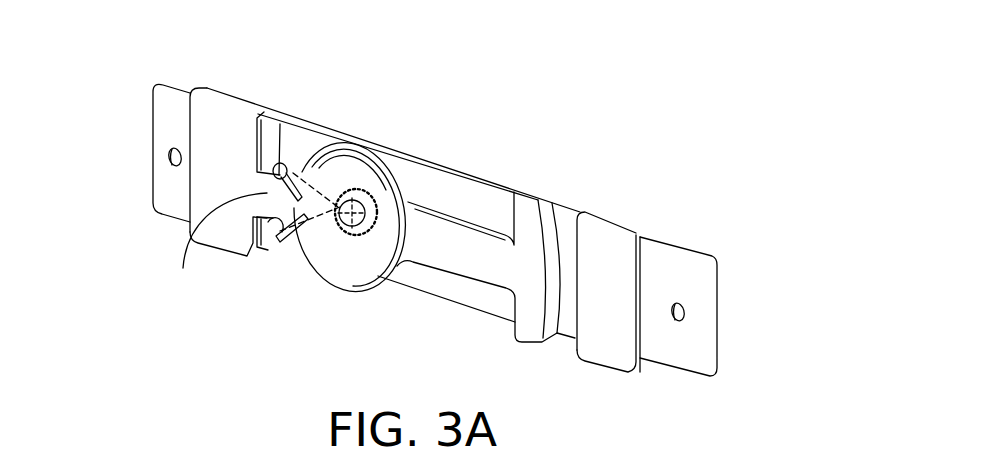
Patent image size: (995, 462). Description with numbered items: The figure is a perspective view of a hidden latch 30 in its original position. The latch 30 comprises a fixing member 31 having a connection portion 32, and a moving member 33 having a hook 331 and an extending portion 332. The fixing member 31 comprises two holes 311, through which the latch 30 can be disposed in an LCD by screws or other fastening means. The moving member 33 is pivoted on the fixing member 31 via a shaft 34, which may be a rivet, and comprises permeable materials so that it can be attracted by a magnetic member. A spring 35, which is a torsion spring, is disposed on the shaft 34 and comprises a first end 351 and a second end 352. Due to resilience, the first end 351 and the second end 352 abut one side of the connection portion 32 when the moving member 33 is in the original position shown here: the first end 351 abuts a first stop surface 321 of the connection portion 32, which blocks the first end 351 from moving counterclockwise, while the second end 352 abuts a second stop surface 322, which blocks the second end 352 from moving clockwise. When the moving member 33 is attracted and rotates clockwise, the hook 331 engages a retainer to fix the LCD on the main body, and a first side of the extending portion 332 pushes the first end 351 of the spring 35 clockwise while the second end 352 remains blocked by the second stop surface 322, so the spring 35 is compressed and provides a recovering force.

The latch 30 is at (55, 35).
The fixing member 31 is at (181, 92).
The holes 311 is at (165, 156).
The connection portion 32 is at (217, 245).
The first stop surface 321 is at (258, 116).
The second stop surface 322 is at (268, 240).
The moving member 33 is at (452, 255).
The hook 331 is at (530, 217).
The extending portion 332 is at (280, 125).
The shaft 34 is at (352, 190).
The spring 35 is at (378, 195).
The first end 351 is at (296, 163).
The second end 352 is at (287, 230).